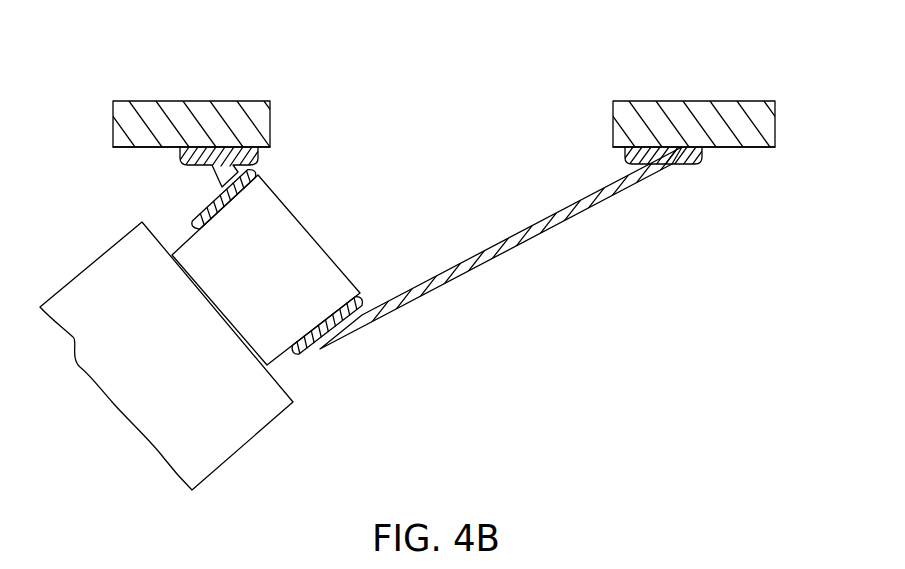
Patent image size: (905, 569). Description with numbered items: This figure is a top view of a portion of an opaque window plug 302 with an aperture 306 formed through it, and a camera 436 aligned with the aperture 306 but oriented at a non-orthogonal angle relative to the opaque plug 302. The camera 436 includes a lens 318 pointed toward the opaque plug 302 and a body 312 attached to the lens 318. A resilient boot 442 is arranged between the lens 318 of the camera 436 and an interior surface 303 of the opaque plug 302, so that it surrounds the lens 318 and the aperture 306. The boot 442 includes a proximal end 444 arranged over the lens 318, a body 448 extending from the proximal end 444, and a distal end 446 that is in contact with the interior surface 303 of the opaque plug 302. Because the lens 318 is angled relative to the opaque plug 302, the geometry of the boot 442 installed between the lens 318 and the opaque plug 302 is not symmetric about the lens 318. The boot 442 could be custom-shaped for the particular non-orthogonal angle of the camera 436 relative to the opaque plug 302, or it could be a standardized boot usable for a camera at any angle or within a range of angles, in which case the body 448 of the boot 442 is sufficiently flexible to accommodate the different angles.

The opaque plug 302 is at (187, 100).
The interior surface 303 is at (128, 148).
The aperture 306 is at (454, 122).
The body 312 is at (229, 438).
The lens 318 is at (276, 340).
The camera 436 is at (219, 336).
The boot 442 is at (420, 253).
The proximal end 444 is at (210, 207).
The distal end 446 is at (192, 164).
The body 448 is at (235, 169).